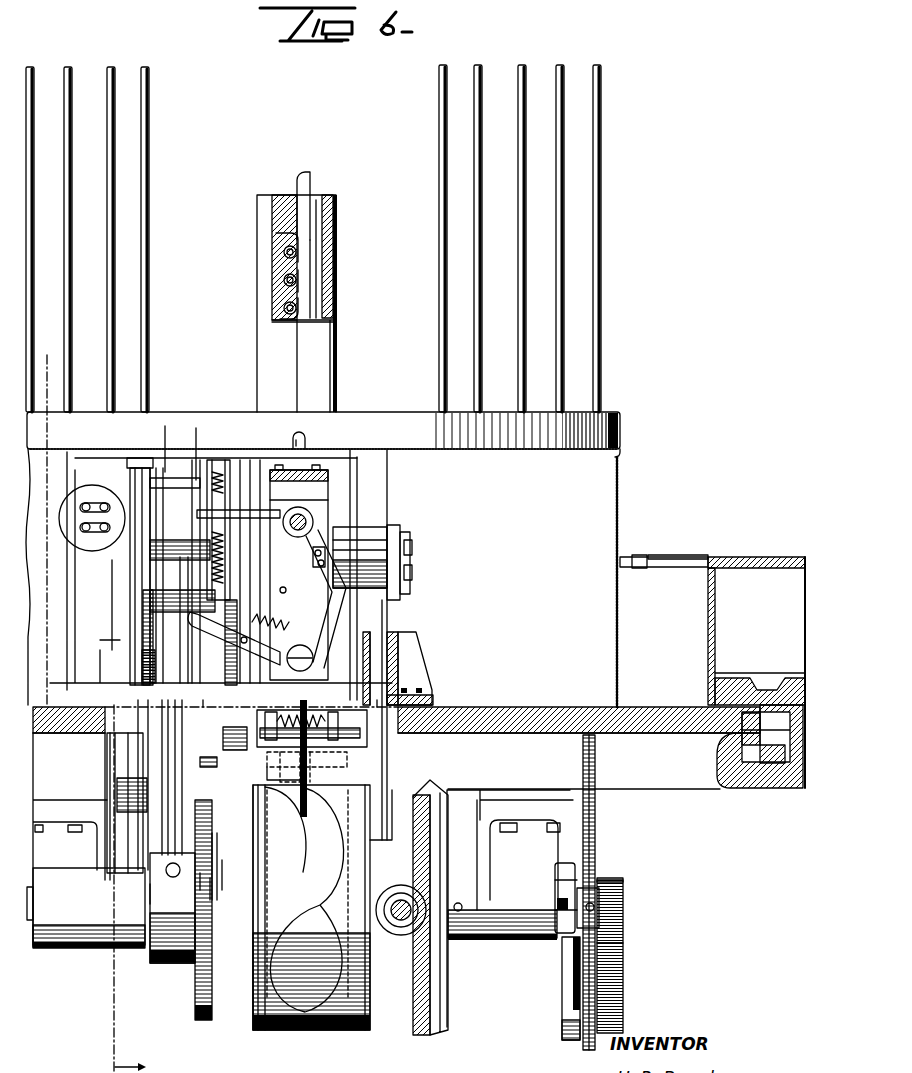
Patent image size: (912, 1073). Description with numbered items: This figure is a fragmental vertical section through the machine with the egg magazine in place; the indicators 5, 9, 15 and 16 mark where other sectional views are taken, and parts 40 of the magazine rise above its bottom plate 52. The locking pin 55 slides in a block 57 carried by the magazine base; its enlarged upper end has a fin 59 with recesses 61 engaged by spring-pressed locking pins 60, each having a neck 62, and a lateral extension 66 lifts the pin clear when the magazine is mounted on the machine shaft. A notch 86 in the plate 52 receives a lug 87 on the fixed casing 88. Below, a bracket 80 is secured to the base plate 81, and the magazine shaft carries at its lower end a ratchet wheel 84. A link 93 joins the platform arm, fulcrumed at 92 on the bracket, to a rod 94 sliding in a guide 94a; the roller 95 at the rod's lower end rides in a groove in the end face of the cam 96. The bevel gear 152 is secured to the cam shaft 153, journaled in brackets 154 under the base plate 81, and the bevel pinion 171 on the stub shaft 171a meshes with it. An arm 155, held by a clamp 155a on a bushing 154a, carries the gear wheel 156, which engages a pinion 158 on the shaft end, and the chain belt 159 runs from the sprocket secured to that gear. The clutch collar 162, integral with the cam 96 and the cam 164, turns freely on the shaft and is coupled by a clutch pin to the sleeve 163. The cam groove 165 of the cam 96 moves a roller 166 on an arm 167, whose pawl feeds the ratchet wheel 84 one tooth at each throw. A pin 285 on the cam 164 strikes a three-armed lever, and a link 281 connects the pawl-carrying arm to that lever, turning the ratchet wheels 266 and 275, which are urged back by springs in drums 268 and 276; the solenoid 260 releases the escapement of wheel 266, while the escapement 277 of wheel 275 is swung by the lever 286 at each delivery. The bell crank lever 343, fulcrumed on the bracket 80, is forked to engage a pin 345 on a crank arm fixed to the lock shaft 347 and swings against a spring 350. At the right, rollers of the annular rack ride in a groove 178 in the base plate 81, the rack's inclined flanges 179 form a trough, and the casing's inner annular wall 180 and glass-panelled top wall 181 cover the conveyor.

The guide rods 40 is at (478, 107).
The section line 5 is at (62, 381).
The lateral extension 66 is at (311, 183).
The fin 59 is at (288, 236).
The neck 62 is at (284, 253).
The spring pressed locking pins 60 is at (283, 268).
The pin 55 is at (318, 277).
The recesses 61 is at (300, 322).
The block 57 is at (322, 361).
The bottom plate 52 is at (400, 412).
The lug 87 is at (295, 437).
The notch 86 is at (306, 437).
The fixed casing 88 is at (620, 479).
The glass panelled top wall 181 is at (769, 557).
The inner annular wall 180 is at (716, 610).
The lateral flanges 179 is at (780, 684).
The groove 178 is at (742, 748).
The base plate 81 is at (512, 707).
The solenoid 260 is at (72, 510).
The escapement 277 is at (140, 460).
The section line 15 is at (160, 433).
The section line 16 is at (191, 443).
The drum 276 is at (130, 621).
The second ratchet wheel 275 is at (145, 682).
The spring column 281 is at (233, 668).
The ratchet wheel 266 is at (262, 668).
The bell crank lever 343 is at (303, 672).
The drum 268 is at (243, 569).
The shaft 347 is at (318, 515).
The bracket 80 is at (326, 548).
The pin 345 is at (345, 545).
The fulcrum 92 is at (412, 545).
The link 93 is at (412, 572).
The spring 350 is at (270, 612).
The rod 94 is at (388, 619).
The guide 94a is at (405, 673).
The section line 9 is at (377, 700).
The lever 286 is at (140, 751).
The cam shaft 153 is at (37, 899).
The brackets 154 is at (82, 948).
The sleeve 163 is at (132, 948).
The clutch collar 162 is at (170, 964).
The cam 164 is at (203, 1021).
The pin 285 is at (208, 876).
The cam 96 is at (345, 1031).
The cam groove 165 is at (268, 1028).
The ratchet wheel 84 is at (370, 749).
The arm 167 is at (332, 770).
The roller 166 is at (312, 790).
The roller 95 is at (378, 792).
The bevel pinion 171 is at (398, 886).
The stub shaft 171a is at (402, 921).
The bevel gear 152 is at (448, 993).
The chain belt 159 is at (597, 833).
The clamp 155a is at (565, 884).
The bushing 154a is at (583, 905).
The pinion 158 is at (625, 892).
The gear wheel 156 is at (625, 978).
The arm 155 is at (570, 991).